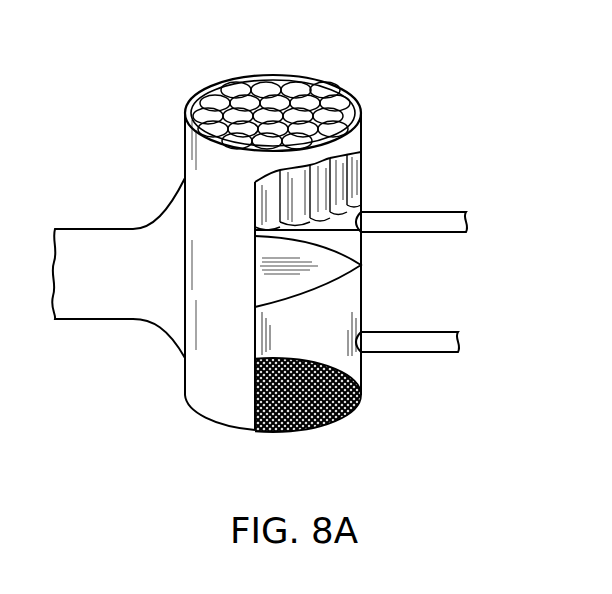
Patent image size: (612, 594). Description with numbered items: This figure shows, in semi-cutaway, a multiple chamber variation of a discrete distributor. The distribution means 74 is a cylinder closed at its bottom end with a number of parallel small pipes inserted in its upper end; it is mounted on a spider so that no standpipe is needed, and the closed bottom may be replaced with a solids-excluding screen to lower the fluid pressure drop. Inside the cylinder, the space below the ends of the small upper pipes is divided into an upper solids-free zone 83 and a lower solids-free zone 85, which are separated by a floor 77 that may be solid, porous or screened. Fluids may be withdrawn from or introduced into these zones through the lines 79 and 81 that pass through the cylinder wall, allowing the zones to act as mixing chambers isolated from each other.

The distribution means 74 is at (328, 73).
The floor 77 is at (361, 265).
The line 79 is at (420, 227).
The line 81 is at (415, 338).
The upper solids-free zone 83 is at (345, 242).
The lower solids-free zone 85 is at (323, 337).